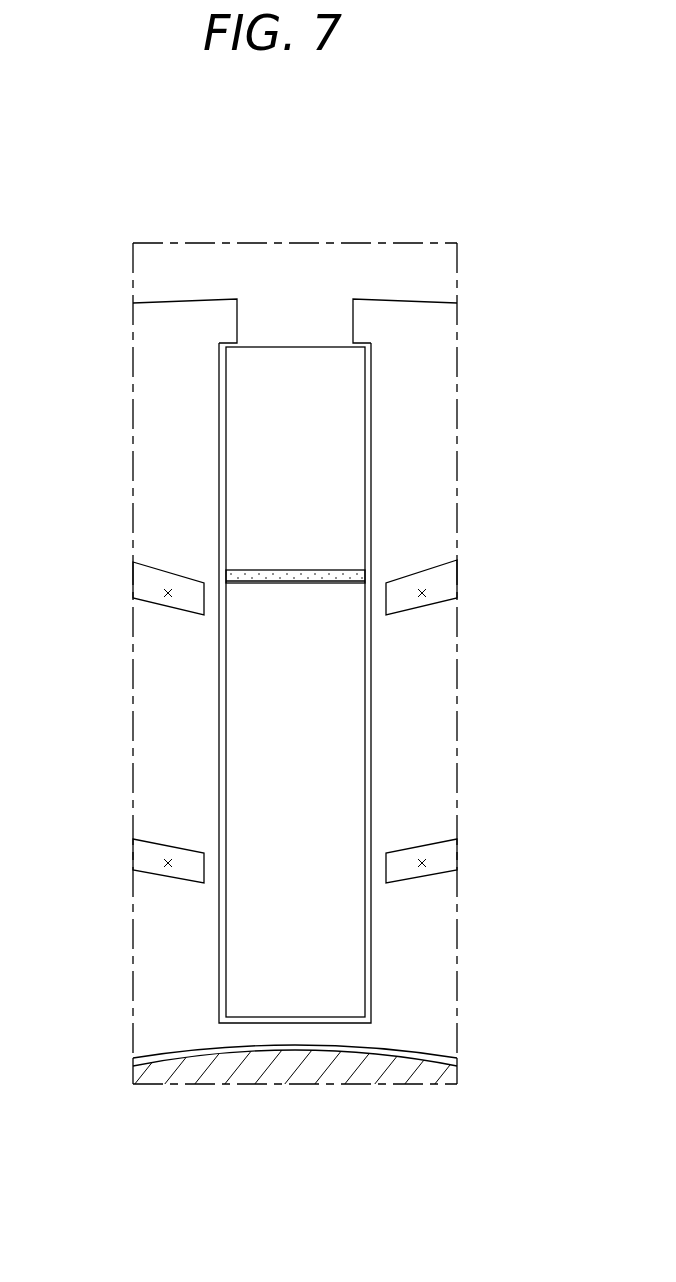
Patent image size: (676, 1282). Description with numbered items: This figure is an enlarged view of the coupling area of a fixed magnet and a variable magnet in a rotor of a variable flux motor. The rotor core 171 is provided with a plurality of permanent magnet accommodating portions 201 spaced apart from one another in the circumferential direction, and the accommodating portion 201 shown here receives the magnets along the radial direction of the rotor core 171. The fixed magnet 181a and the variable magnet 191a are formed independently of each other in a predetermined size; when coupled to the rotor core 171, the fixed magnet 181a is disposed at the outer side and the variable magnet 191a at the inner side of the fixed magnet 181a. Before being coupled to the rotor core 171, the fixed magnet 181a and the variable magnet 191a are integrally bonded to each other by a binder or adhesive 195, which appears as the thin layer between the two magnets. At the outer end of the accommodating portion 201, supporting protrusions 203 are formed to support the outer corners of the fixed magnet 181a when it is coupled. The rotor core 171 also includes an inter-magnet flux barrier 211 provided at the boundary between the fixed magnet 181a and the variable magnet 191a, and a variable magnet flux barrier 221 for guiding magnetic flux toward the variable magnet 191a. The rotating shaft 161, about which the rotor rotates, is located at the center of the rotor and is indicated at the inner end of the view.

The rotor core 171 is at (152, 967).
The supporting protrusion 203 is at (230, 319).
The permanent magnet accommodating portion 201 is at (219, 693).
The fixed magnet 181a is at (333, 460).
The binder or adhesive 195 is at (350, 570).
The variable magnet 191a is at (333, 760).
The inter-magnet flux barrier 211 is at (168, 593).
The variable magnet flux barrier 221 is at (168, 863).
The rotating shaft 161 is at (292, 1071).